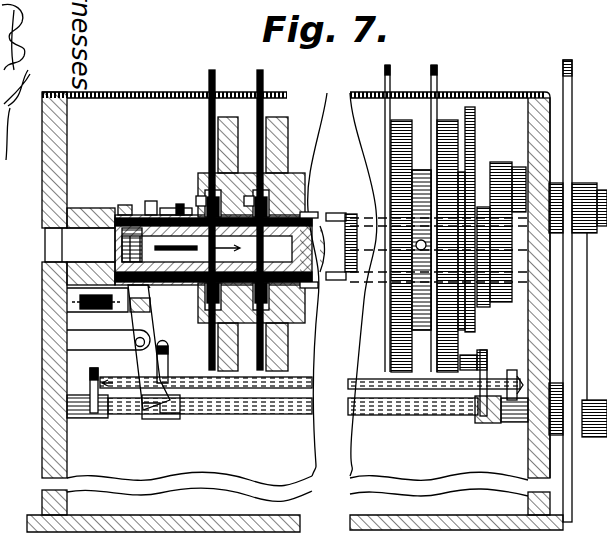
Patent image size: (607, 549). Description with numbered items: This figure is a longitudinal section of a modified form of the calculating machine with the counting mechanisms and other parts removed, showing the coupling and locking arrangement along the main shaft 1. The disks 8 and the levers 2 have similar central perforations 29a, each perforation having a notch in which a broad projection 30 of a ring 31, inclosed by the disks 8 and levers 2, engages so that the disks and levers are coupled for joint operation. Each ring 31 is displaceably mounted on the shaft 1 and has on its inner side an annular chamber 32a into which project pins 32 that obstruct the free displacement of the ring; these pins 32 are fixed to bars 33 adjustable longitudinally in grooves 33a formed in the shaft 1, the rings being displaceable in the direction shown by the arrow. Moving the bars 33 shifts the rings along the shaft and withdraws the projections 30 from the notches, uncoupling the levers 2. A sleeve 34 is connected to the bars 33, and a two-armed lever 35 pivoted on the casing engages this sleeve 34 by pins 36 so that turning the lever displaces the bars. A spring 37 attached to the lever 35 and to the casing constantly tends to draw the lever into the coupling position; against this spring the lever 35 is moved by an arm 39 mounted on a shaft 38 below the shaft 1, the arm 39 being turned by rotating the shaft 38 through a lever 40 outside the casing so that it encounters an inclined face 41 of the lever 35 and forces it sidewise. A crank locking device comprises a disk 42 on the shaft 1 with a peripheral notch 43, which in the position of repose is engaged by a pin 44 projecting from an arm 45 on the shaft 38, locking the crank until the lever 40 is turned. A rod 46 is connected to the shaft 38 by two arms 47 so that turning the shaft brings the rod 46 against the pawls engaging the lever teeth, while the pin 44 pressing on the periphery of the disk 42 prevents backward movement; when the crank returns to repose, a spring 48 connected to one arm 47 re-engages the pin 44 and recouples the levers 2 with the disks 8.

The shaft 1 is at (310, 247).
The levers 2 is at (258, 74).
The disks 8 is at (248, 137).
The central perforations 29a is at (200, 196).
The broad projection 30 is at (206, 198).
The ring 31 is at (284, 172).
The pins 32 is at (290, 200).
The annular chamber 32a is at (207, 249).
The bars 33 is at (332, 213).
The grooves 33a is at (330, 280).
The sleeve 34 is at (126, 205).
The two-armed lever 35 is at (163, 312).
The pins 36 is at (130, 248).
The spring 37 is at (80, 310).
The shaft 38 is at (356, 414).
The arm 39 is at (163, 368).
The lever 40 is at (572, 82).
The inclined face 41 is at (180, 419).
The disk 42 is at (476, 110).
The peripheral notch 43 is at (514, 381).
The pin 44 is at (462, 376).
The arm 45 is at (483, 392).
The rod 46 is at (312, 380).
The arms 47 is at (96, 414).
The spring 48 is at (596, 346).